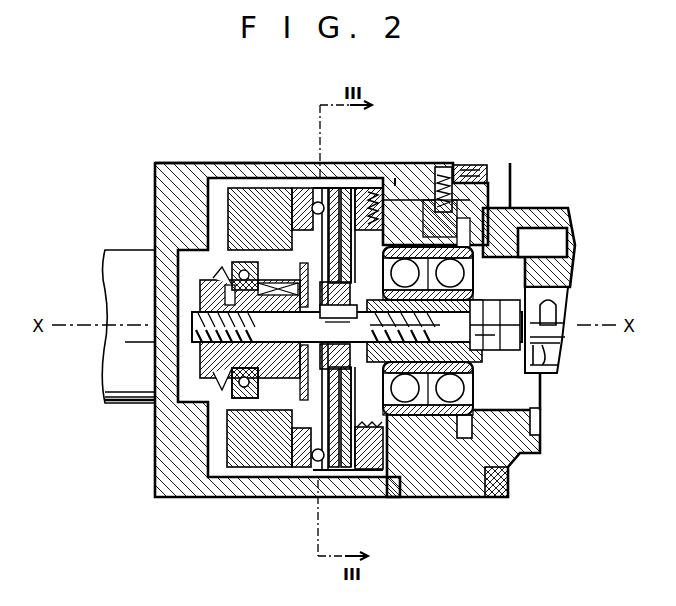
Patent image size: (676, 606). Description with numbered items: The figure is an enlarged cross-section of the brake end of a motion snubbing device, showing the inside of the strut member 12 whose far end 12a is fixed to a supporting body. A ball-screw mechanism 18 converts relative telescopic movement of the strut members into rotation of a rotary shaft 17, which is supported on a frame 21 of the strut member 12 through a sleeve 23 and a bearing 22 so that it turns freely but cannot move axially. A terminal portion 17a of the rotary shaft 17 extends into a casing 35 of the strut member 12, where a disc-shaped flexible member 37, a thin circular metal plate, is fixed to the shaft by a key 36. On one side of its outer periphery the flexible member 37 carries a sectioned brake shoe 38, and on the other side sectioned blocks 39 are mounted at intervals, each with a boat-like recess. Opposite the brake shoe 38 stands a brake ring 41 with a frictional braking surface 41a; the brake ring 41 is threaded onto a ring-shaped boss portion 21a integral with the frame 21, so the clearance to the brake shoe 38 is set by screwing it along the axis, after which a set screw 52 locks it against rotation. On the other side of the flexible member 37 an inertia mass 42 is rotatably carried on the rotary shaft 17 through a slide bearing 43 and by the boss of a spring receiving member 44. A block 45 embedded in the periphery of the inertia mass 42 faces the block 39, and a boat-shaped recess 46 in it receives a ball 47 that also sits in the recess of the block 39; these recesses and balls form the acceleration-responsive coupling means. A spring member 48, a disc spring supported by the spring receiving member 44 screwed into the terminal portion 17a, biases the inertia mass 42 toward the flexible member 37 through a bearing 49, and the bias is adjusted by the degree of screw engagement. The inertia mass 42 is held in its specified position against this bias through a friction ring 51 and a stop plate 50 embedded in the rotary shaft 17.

The strut member 12 is at (260, 160).
The end of the strut member 12a is at (122, 258).
The rotary shaft 17 is at (510, 350).
The terminal portion of the rotary shaft 17a is at (265, 396).
The ball-screw mechanism 18 is at (572, 295).
The frame 21 is at (528, 200).
The ring-shaped boss portion 21a is at (398, 497).
The bearing 22 is at (478, 165).
The sleeve 23 is at (490, 292).
The casing 35 is at (180, 162).
The key 36 is at (338, 320).
The flexible member 37 is at (340, 490).
The brake shoe 38 is at (347, 190).
The sectioned blocks 39 is at (334, 190).
The brake ring 41 is at (405, 180).
The frictional braking surface 41a is at (370, 188).
The inertia mass 42 is at (243, 190).
The slide bearing 43 is at (268, 247).
The spring receiving member 44 is at (200, 362).
The block 45 is at (312, 204).
The boat-shaped recess 46 is at (323, 190).
The ball 47 is at (305, 497).
The spring member 48 is at (226, 395).
The bearing 49 is at (240, 388).
The stop plate 50 is at (357, 327).
The friction ring 51 is at (267, 406).
The set screw 52 is at (395, 185).